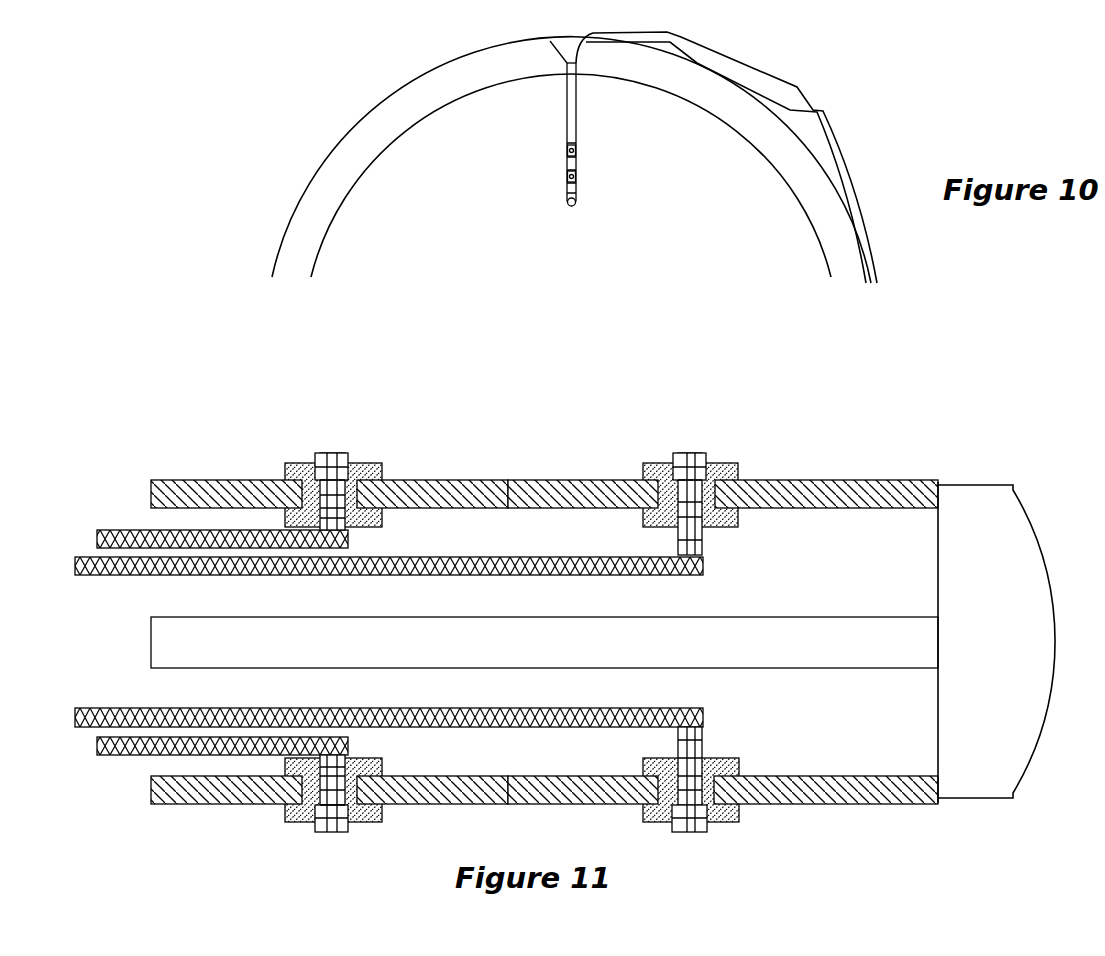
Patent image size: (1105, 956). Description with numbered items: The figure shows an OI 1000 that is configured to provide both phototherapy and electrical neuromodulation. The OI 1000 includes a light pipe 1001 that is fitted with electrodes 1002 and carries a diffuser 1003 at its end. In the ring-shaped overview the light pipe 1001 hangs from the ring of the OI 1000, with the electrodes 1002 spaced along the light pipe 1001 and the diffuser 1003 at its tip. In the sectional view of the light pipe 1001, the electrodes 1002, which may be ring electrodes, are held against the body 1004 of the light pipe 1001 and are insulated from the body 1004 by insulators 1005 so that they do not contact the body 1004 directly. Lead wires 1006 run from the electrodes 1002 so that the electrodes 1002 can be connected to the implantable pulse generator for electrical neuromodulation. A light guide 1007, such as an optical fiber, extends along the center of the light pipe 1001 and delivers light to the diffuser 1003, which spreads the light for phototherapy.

In FIG. 10, the OI 1000 is at (800, 76).
In FIG. 10, the light pipe 1001 is at (543, 109).
In FIG. 11, the light pipe 1001 is at (282, 424).
In FIG. 10, the electrodes 1002 is at (577, 177).
In FIG. 11, the electrodes 1002 is at (687, 453).
In FIG. 10, the diffuser 1003 is at (568, 205).
In FIG. 11, the diffuser 1003 is at (996, 641).
In FIG. 11, the body 1004 is at (813, 480).
In FIG. 11, the insulators 1005 is at (738, 462).
In FIG. 11, the lead wires 1006 is at (702, 575).
In FIG. 11, the light guide 1007 is at (544, 642).